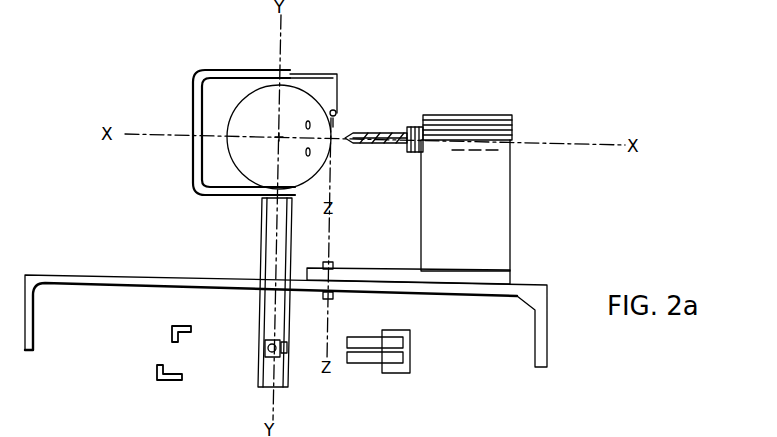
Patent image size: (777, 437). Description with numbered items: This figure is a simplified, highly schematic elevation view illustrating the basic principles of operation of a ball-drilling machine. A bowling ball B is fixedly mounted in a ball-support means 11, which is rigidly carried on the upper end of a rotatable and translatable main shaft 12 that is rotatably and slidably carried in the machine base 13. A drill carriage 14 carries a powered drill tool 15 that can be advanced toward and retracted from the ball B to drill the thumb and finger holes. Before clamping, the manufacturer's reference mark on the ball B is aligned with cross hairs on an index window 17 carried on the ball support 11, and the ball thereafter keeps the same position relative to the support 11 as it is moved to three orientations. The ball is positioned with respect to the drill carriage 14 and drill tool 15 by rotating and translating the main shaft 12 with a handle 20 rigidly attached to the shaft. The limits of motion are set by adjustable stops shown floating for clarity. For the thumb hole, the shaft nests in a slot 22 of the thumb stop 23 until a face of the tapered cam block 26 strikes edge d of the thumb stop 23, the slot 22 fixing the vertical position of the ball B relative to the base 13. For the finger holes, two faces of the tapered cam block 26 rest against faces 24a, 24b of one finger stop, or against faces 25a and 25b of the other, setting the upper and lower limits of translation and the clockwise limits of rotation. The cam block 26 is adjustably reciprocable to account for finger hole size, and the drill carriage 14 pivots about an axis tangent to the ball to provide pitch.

The ball-support means 11 is at (195, 100).
The bowling ball B is at (252, 117).
The index window 17 is at (336, 119).
The drill tool 15 is at (378, 132).
The drill carriage 14 is at (442, 125).
The machine base 13 is at (170, 275).
The main shaft 12 is at (275, 237).
The handle 20 is at (268, 345).
The tapered cam block 26 is at (275, 340).
The slot 22 is at (360, 347).
The thumb stop 23 is at (408, 350).
The edge d is at (380, 367).
The face 24a is at (195, 335).
The face 24b is at (180, 344).
The face 25a is at (182, 370).
The face 25b is at (166, 367).